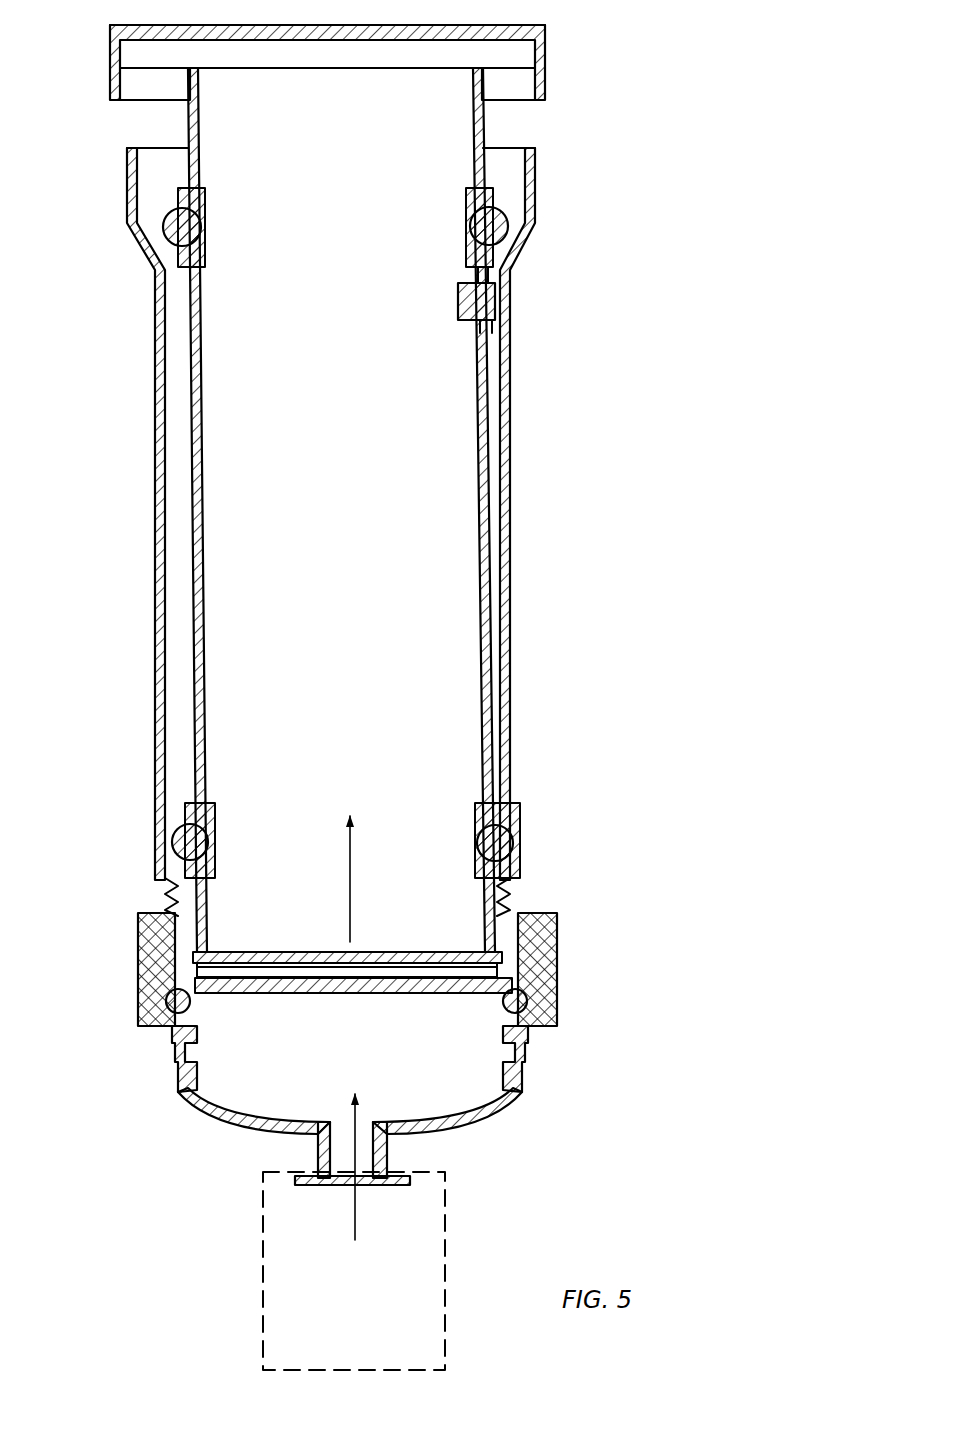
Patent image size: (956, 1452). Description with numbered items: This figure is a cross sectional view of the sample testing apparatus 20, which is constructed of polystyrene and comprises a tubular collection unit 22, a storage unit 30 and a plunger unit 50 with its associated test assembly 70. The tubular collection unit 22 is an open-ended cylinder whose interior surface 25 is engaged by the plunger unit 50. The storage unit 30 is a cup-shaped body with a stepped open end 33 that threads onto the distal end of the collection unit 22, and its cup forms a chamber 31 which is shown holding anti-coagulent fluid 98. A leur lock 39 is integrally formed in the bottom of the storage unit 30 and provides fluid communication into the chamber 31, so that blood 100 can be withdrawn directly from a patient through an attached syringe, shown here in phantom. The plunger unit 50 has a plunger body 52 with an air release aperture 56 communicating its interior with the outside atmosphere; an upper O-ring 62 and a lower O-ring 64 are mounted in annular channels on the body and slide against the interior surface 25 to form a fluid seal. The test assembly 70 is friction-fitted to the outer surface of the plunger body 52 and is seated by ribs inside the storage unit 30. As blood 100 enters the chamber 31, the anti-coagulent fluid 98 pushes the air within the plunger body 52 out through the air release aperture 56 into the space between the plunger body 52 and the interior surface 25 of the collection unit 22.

The sample testing apparatus 20 is at (549, 653).
The tubular collection unit 22 is at (522, 713).
The interior surface 25 is at (490, 433).
The storage unit 30 is at (534, 1080).
The chamber 31 is at (328, 1133).
The stepped open end 33 is at (174, 1063).
The leur lock 39 is at (410, 1183).
The plunger unit 50 is at (495, 770).
The plunger body 52 is at (490, 523).
The air release aperture 56 is at (500, 303).
The upper O-ring 62 is at (503, 220).
The lower O-ring 64 is at (517, 825).
The test assembly 70 is at (543, 967).
The anti-coagulent fluid 98 is at (370, 1036).
The blood 100 is at (354, 1232).